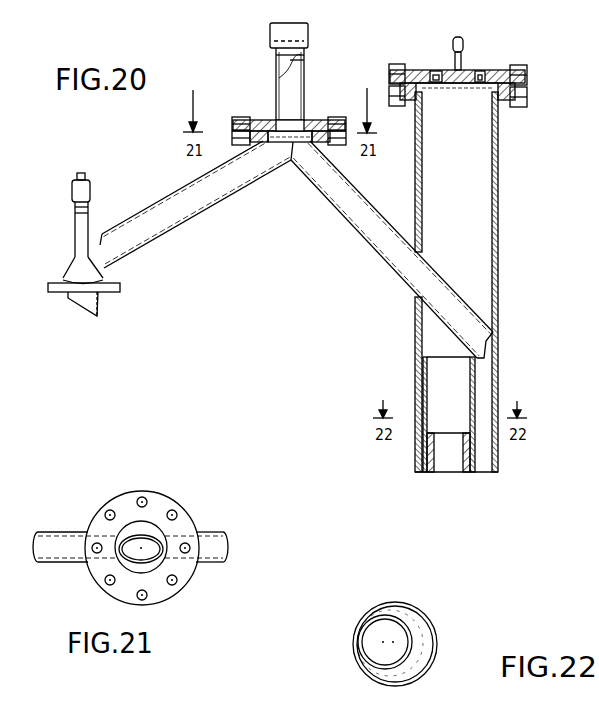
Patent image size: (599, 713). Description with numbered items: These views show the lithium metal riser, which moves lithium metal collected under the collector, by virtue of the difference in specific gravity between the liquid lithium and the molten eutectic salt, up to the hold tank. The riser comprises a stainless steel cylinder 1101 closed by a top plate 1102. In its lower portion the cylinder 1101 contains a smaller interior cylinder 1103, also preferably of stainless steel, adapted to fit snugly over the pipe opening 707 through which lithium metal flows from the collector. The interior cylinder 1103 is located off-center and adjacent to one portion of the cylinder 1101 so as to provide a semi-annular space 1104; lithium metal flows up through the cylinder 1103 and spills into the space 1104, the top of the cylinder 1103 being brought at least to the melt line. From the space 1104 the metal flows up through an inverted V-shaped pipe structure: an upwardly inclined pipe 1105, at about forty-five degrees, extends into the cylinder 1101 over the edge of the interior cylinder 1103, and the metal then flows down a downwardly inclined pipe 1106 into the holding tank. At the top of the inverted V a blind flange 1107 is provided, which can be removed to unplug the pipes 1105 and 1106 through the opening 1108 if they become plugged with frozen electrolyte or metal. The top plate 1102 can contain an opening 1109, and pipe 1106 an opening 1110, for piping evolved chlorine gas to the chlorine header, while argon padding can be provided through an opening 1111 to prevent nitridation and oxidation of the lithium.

In FIG. 20, the pipe opening 707 is at (442, 458).
In FIG. 20, the cylinder 1101 is at (498, 158).
In FIG. 22, the cylinder 1101 is at (414, 609).
In FIG. 20, the top plate 1102 is at (510, 67).
In FIG. 20, the smaller interior cylinder 1103 is at (476, 381).
In FIG. 22, the smaller interior cylinder 1103 is at (410, 632).
In FIG. 20, the semi-annular space 1104 is at (471, 465).
In FIG. 22, the semi-annular space 1104 is at (420, 662).
In FIG. 20, the upwardly inclined pipe 1105 is at (362, 230).
In FIG. 21, the upwardly inclined pipe 1105 is at (210, 540).
In FIG. 20, the downwardly inclined pipe 1106 is at (176, 222).
In FIG. 21, the downwardly inclined pipe 1106 is at (68, 540).
In FIG. 20, the blind flange 1107 is at (262, 119).
In FIG. 21, the blind flange 1107 is at (168, 508).
In FIG. 21, the opening 1108 is at (130, 541).
In FIG. 20, the opening 1109 is at (437, 70).
In FIG. 20, the pipe opening 1110 is at (73, 219).
In FIG. 20, the opening 1111 is at (482, 70).